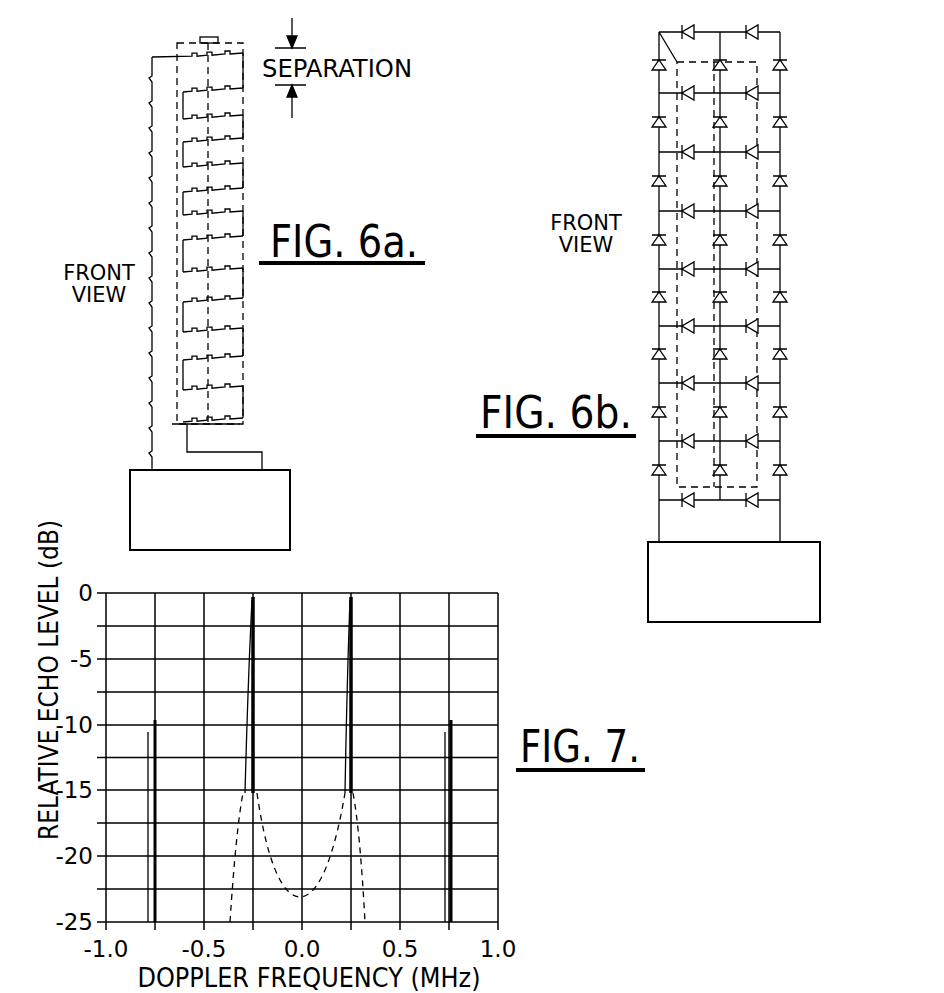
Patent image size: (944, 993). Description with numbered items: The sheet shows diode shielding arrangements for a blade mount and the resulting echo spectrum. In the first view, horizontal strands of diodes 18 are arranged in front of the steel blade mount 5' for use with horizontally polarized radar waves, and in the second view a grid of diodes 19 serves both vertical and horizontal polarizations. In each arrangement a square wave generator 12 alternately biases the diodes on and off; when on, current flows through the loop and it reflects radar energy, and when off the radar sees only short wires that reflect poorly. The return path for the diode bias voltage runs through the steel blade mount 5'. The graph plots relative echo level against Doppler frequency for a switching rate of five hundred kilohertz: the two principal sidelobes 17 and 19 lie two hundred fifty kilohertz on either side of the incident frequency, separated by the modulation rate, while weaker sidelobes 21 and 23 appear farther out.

In FIG. 6a, the steel blade mount 5' is at (145, 263).
In FIG. 6b, the steel blade mount 5' is at (798, 375).
In FIG. 6a, the horizontal strands of diodes 18 is at (245, 333).
In FIG. 6a, the square wave generator 12 is at (130, 517).
In FIG. 6b, the square wave generator 12 is at (648, 566).
In FIG. 6b, the grid of diodes 19 is at (782, 160).
In FIG. 7, the grid of diodes 19 is at (350, 680).
In FIG. 7, the principal sidelobe 17 is at (250, 672).
In FIG. 7, the weaker sidelobe 21 is at (152, 773).
In FIG. 7, the weaker sidelobe 23 is at (449, 775).